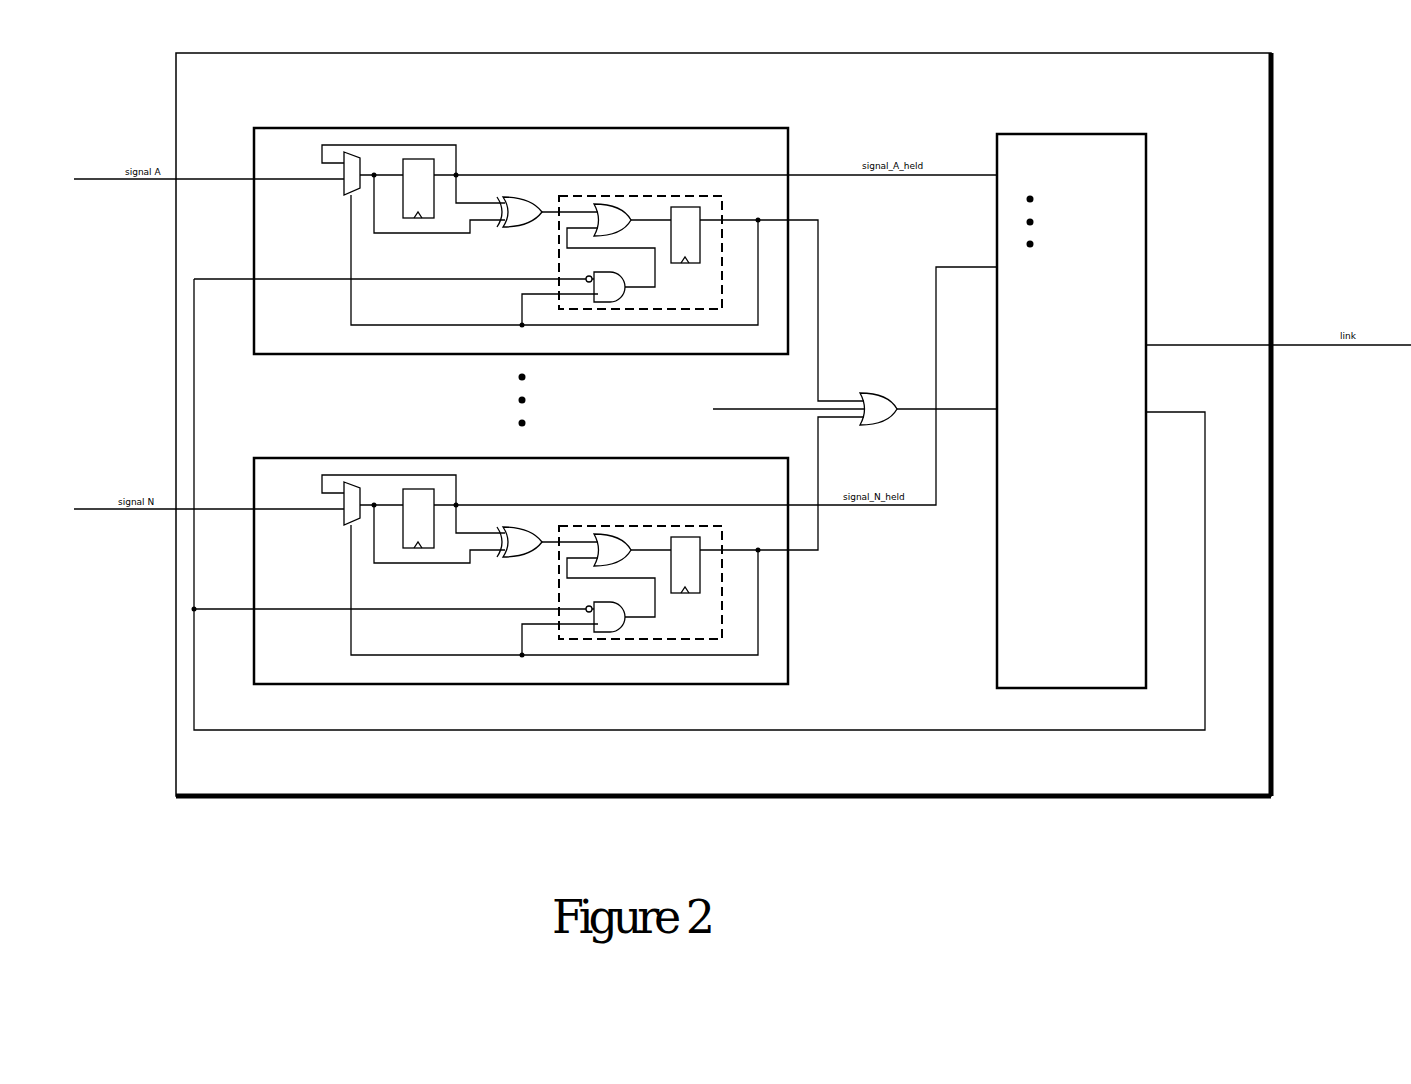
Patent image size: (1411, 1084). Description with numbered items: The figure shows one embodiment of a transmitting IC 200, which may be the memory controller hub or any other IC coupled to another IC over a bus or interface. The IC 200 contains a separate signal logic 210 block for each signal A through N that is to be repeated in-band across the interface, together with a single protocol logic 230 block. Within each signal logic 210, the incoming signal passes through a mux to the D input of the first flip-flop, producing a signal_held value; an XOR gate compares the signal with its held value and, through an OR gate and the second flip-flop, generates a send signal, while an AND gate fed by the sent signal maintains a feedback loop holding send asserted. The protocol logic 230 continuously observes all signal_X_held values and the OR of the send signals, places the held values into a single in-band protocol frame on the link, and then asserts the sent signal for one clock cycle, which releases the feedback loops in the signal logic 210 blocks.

The transmitting IC 200 is at (1227, 111).
The signal logic 210 is at (307, 334).
The protocol logic 230 is at (1038, 659).